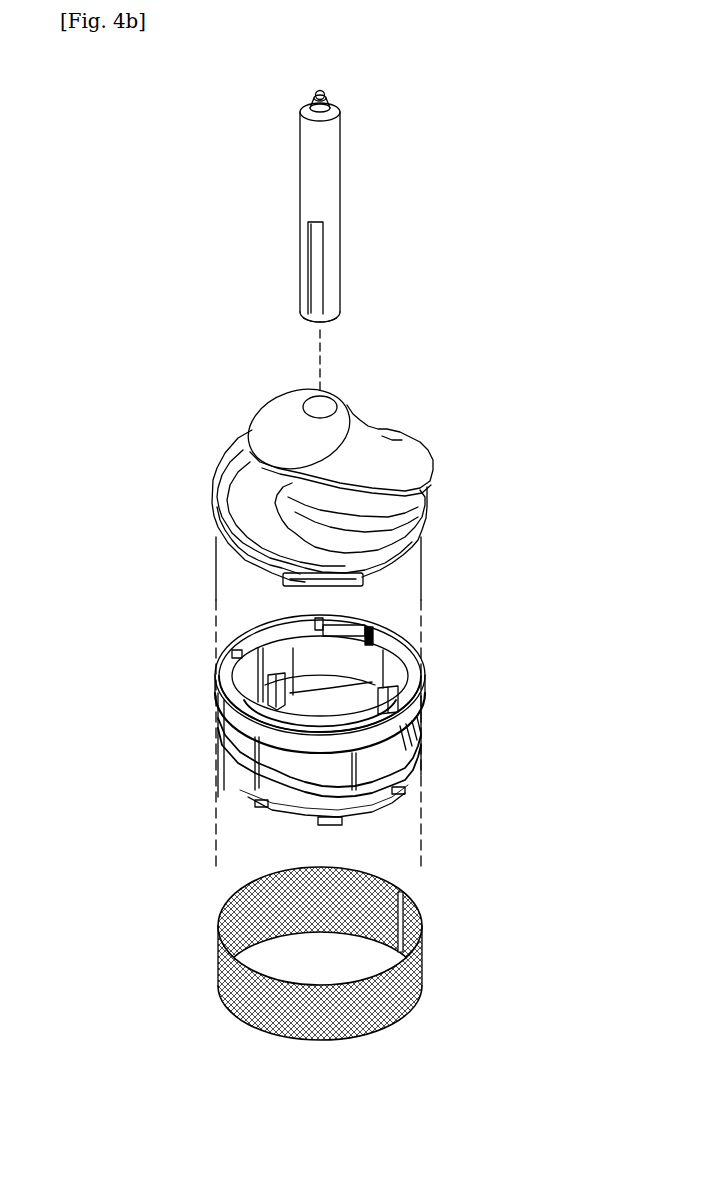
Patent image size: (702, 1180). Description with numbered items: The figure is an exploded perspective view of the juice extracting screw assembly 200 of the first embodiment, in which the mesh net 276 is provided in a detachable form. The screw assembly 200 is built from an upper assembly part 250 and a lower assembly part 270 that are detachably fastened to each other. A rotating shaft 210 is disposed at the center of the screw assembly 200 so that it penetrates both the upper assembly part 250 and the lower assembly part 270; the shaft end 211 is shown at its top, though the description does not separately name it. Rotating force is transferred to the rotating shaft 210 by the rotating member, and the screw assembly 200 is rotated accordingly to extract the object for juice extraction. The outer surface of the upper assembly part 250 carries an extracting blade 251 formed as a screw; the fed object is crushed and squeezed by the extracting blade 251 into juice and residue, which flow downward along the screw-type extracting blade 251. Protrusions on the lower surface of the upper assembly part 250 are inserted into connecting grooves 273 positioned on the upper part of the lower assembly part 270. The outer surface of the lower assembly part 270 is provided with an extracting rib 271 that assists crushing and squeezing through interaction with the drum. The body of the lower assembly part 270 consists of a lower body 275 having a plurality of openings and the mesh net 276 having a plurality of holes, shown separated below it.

The screw assembly 200 is at (120, 67).
The rotating shaft 210 is at (345, 192).
The shaft tip 211 is at (332, 97).
The upper assembly part 250 is at (178, 443).
The extracting blade 251 is at (424, 455).
The lower assembly part 270 is at (173, 690).
The extracting rib 271 is at (427, 700).
The connecting groove 273 is at (372, 627).
The lower body 275 is at (425, 717).
The mesh net 276 is at (420, 965).